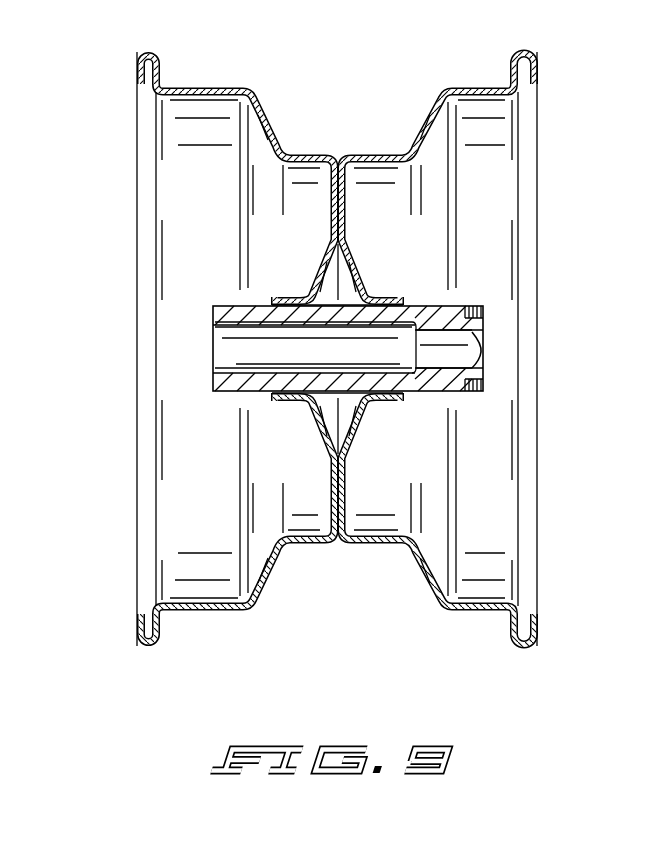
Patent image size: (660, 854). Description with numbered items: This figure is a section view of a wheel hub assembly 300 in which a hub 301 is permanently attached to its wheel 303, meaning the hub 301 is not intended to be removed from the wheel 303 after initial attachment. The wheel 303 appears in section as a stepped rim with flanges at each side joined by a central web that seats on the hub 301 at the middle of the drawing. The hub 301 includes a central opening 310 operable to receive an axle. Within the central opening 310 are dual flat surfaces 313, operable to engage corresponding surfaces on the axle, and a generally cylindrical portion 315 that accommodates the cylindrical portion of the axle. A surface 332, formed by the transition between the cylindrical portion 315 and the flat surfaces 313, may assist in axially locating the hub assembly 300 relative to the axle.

The wheel hub assembly 300 is at (376, 324).
The hub 301 is at (213, 306).
The wheel 303 is at (168, 84).
The central opening 310 is at (450, 357).
The dual flat surfaces 313 is at (480, 353).
The cylindrical portion 315 is at (227, 378).
The surface 332 is at (407, 303).